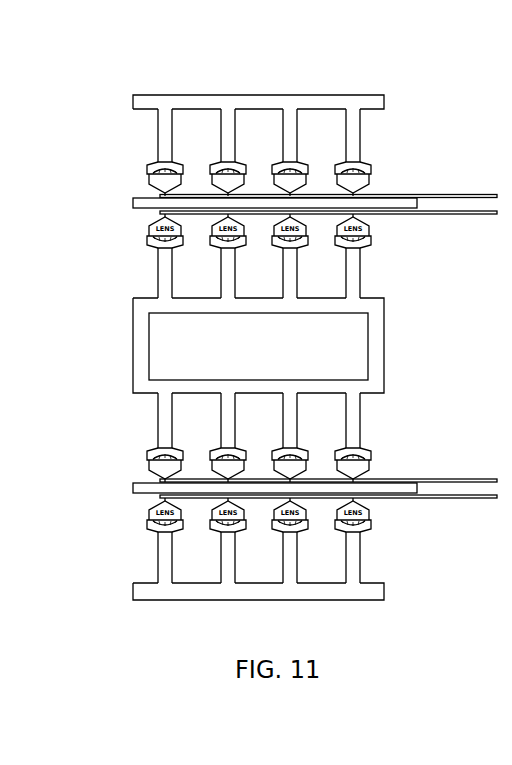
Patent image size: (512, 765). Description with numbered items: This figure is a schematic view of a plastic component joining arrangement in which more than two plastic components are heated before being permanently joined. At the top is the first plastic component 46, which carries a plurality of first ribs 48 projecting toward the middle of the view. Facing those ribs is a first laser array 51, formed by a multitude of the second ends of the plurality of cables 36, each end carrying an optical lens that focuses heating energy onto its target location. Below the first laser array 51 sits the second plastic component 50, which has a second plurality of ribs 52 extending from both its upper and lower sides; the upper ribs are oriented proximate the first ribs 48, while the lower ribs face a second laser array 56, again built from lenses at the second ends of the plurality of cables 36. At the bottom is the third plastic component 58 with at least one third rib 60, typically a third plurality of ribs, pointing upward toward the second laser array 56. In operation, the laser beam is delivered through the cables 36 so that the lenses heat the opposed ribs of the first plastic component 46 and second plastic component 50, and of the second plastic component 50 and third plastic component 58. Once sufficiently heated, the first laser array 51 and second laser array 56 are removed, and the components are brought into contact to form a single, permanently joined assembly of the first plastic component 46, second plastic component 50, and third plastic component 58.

The first plastic component 46 is at (273, 93).
The first rib 48 is at (158, 128).
The laser array 51 is at (375, 162).
The cables 36 is at (453, 220).
The second plurality of ribs 52 is at (158, 290).
The second plastic component 50 is at (145, 332).
The second laser array 56 is at (382, 443).
The third rib 60 is at (170, 572).
The third plastic component 58 is at (192, 592).